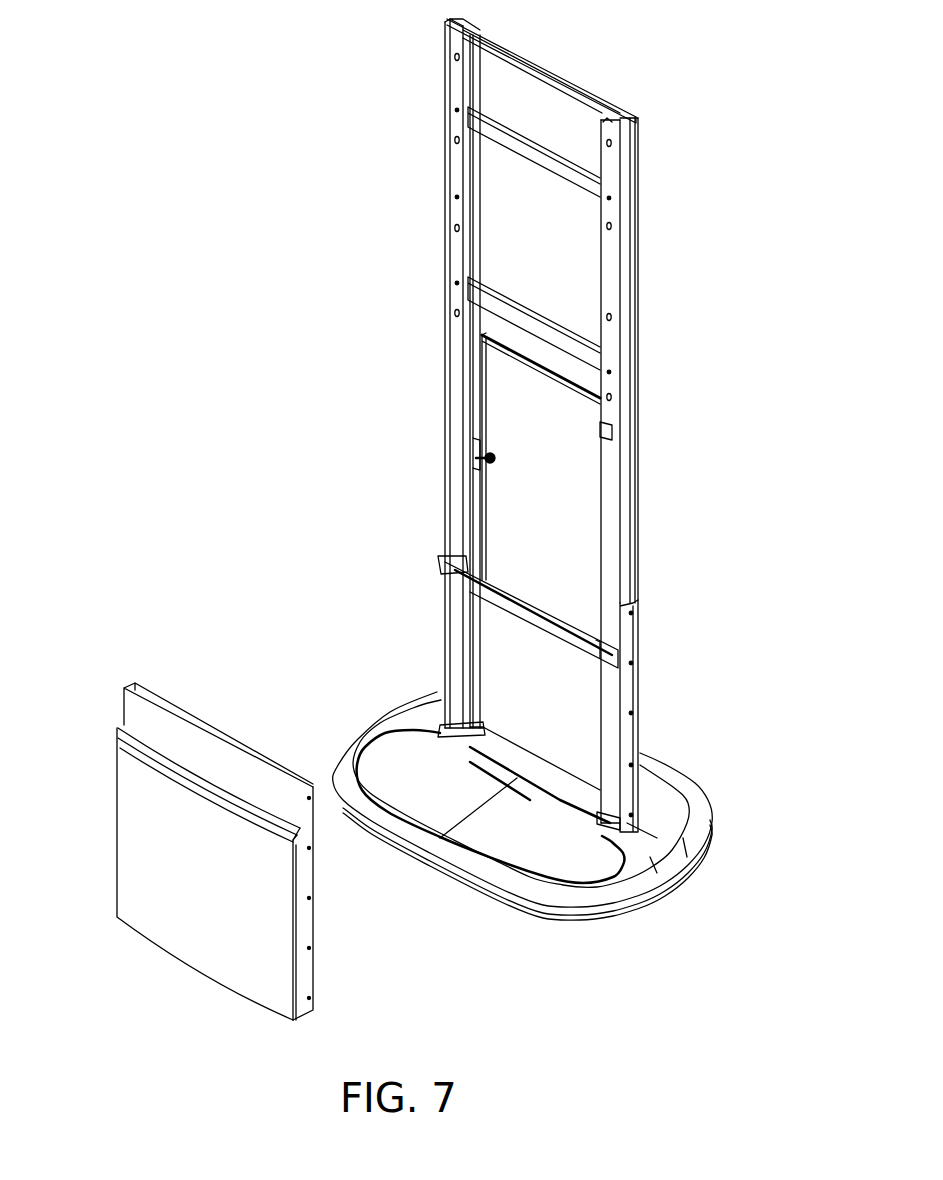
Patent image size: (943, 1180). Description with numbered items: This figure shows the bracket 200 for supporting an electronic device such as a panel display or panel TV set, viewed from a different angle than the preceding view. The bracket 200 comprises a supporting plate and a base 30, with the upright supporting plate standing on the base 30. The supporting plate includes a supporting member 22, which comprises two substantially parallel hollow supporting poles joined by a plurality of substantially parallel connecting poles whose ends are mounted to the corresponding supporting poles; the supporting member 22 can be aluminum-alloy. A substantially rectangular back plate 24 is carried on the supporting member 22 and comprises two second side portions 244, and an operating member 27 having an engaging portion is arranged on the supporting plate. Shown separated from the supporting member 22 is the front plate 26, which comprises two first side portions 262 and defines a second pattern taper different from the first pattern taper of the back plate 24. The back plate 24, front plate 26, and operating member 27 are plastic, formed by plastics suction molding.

The bracket 200 is at (318, 38).
The supporting member 22 is at (607, 278).
The back plate 24 is at (530, 100).
The second side portion 244 is at (630, 695).
The operating member 27 is at (513, 413).
The base 30 is at (650, 797).
The front plate 26 is at (157, 875).
The first side portion 262 is at (302, 935).